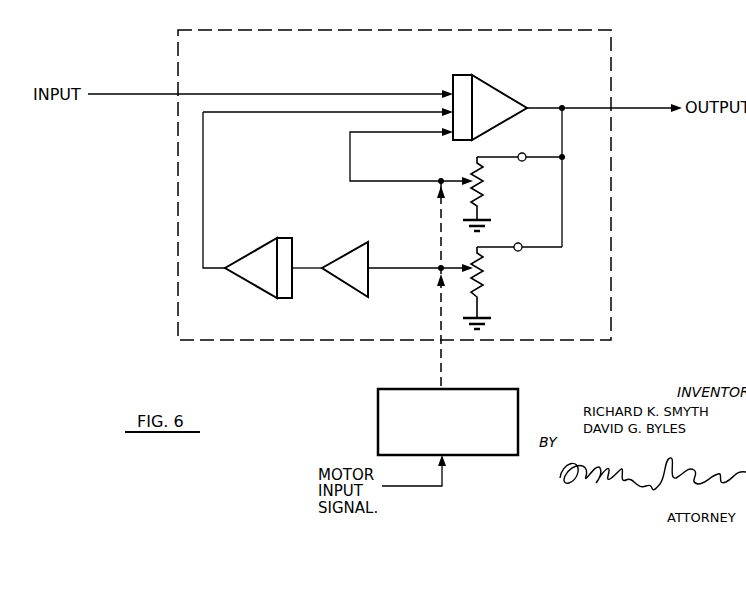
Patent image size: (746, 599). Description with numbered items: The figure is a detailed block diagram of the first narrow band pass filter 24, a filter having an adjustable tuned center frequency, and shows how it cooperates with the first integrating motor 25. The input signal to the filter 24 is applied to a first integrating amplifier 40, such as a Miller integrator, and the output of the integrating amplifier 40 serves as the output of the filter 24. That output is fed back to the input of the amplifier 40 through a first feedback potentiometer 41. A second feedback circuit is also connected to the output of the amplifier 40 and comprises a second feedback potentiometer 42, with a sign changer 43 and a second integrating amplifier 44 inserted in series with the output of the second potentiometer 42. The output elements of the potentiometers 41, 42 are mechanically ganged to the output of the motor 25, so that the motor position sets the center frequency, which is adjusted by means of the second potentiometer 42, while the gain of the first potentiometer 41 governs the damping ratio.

The first narrow band pass filter 24 is at (168, 181).
The first integrating motor 25 is at (385, 428).
The first integrating amplifier 40 is at (493, 103).
The first feedback potentiometer 41 is at (487, 157).
The second feedback potentiometer 42 is at (495, 262).
The sign changer 43 is at (350, 265).
The second integrating amplifier 44 is at (265, 258).